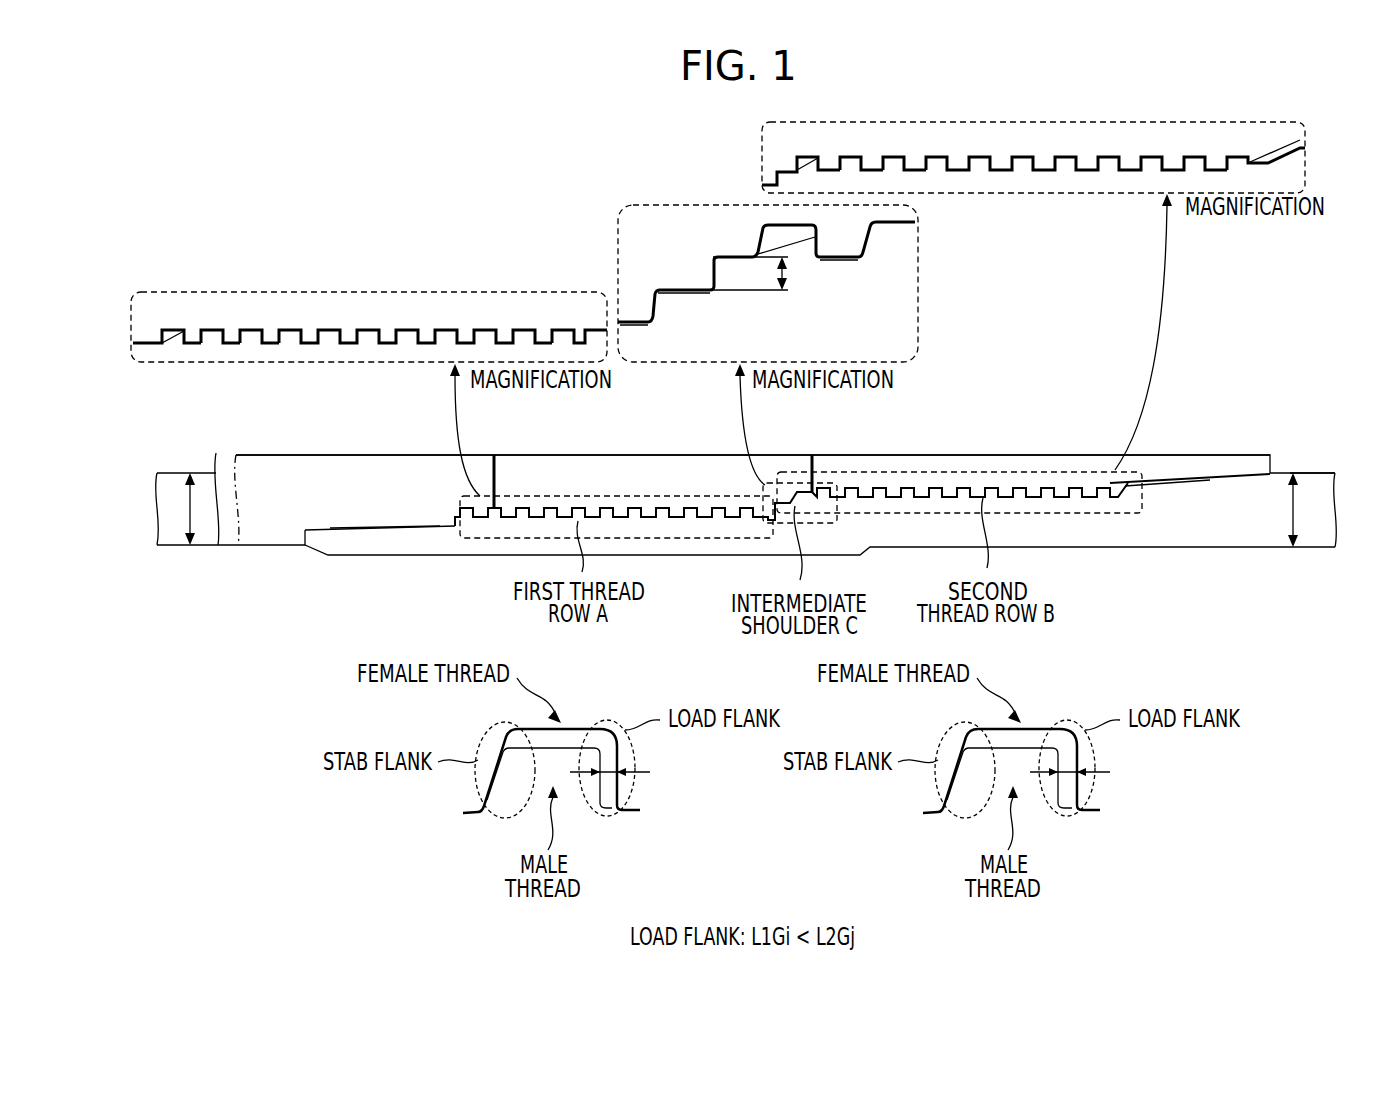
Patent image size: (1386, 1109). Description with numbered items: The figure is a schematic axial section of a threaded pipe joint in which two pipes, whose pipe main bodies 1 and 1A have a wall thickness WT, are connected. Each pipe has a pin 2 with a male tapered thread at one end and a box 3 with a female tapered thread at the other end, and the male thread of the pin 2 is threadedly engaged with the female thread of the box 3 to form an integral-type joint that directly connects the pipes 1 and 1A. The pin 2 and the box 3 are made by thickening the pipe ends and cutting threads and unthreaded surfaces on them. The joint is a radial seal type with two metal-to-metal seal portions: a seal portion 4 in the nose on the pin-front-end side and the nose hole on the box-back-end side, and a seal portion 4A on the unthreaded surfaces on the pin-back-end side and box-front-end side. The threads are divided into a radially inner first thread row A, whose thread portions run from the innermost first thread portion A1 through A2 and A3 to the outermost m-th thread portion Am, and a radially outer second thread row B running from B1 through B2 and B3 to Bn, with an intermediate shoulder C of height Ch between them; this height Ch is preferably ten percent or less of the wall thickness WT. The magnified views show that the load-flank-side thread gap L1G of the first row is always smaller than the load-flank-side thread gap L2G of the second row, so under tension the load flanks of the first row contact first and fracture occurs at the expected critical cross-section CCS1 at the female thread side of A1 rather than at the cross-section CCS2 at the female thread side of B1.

The pipe main body 1 is at (1318, 532).
The pipe main body 1A is at (167, 532).
The pin 2 is at (663, 550).
The box 3 is at (664, 460).
The seal portion 4 is at (383, 527).
The seal portion 4A is at (1220, 484).
The cross-section CCS1 is at (496, 474).
The cross-section CCS2 is at (813, 470).
The wall thickness WT is at (755, 510).
The height of the intermediate shoulder Ch is at (764, 274).
The load-flank-side thread gap L1G is at (612, 780).
The load-flank-side thread gap L2G is at (1072, 780).
The first thread portion A1 is at (167, 323).
The thread portion A2 is at (220, 323).
The thread portion A3 is at (259, 323).
The m-th thread portion Am is at (575, 320).
The first thread portion B1 is at (801, 159).
The thread portion B2 is at (860, 151).
The thread portion B3 is at (904, 151).
The n-th thread portion Bn is at (1265, 148).